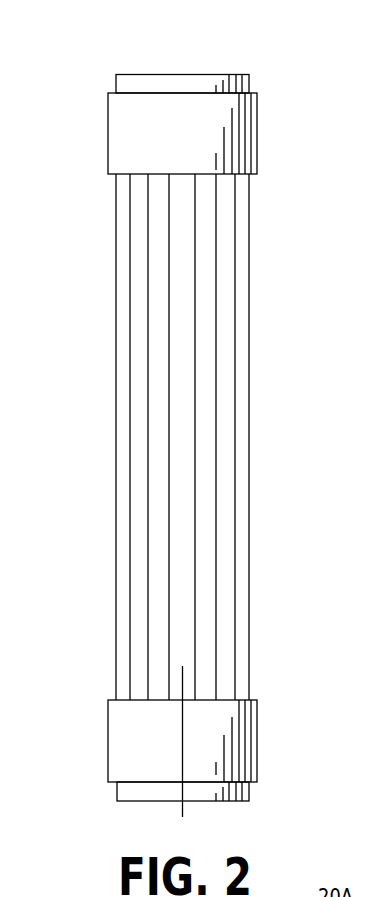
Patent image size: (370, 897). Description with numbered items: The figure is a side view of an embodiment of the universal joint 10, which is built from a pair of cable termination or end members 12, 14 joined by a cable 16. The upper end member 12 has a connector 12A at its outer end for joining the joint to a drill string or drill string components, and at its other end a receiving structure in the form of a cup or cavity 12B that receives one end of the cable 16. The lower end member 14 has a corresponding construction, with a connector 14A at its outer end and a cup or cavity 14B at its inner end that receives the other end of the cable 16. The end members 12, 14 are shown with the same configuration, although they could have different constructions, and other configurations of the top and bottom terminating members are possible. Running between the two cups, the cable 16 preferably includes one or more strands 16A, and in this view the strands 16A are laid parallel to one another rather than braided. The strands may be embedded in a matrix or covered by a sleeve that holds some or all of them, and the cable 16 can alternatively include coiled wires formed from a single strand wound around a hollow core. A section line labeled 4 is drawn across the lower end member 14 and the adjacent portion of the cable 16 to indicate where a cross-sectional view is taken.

The universal joint 10 is at (296, 78).
The end member 12 is at (272, 134).
The connector 12A is at (116, 90).
The cup or cavity 12B is at (108, 135).
The cable 16 is at (268, 423).
The strands 16A is at (116, 423).
The end member 14 is at (272, 738).
The cup or cavity 14B is at (108, 738).
The connector 14A is at (117, 790).
The section line 4- 4 is at (202, 817).